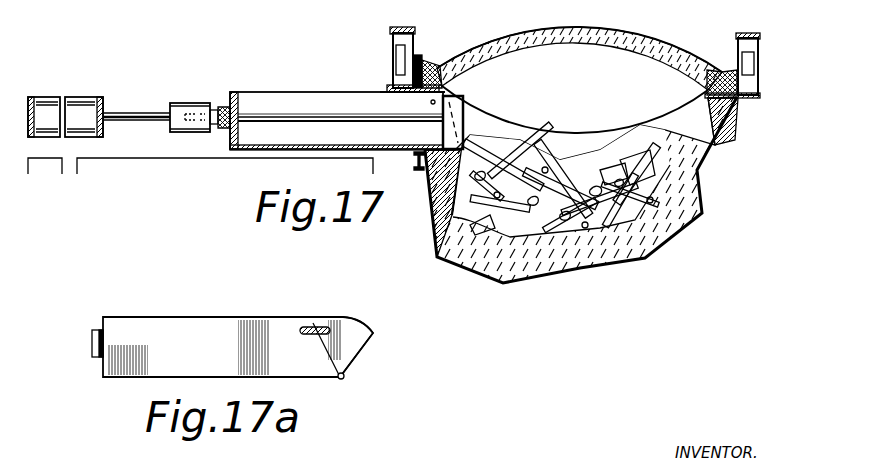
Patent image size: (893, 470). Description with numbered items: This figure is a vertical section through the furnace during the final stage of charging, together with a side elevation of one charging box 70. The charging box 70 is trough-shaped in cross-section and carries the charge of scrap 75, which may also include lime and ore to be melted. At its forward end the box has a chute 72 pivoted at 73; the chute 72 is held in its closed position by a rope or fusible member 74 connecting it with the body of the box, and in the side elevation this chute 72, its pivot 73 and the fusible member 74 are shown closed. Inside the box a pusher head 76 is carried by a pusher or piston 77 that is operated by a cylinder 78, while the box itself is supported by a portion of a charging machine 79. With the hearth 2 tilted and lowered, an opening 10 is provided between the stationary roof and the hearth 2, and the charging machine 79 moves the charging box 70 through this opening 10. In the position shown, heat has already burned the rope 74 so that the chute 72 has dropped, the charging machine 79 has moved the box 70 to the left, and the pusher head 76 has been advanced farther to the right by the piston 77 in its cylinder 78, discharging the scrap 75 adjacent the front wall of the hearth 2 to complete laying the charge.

In FIG. 17, the tilting hearth 2 is at (690, 160).
In FIG. 17, the opening 10 is at (413, 159).
In FIG. 17, the charging box 70 is at (276, 96).
In FIG. 17A, the charging box 70 is at (103, 366).
In FIG. 17, the chute 72 is at (450, 180).
In FIG. 17A, the chute 72 is at (373, 333).
In FIG. 17A, the pivot 73 is at (345, 379).
In FIG. 17A, the rope or fusible member 74 is at (318, 326).
In FIG. 17, the charge of scrap 75 is at (562, 170).
In FIG. 17, the pusher head 76 is at (462, 106).
In FIG. 17, the pusher or piston 77 is at (160, 116).
In FIG. 17, the cylinder 78 is at (84, 108).
In FIG. 17, the charging machine 79 is at (141, 161).